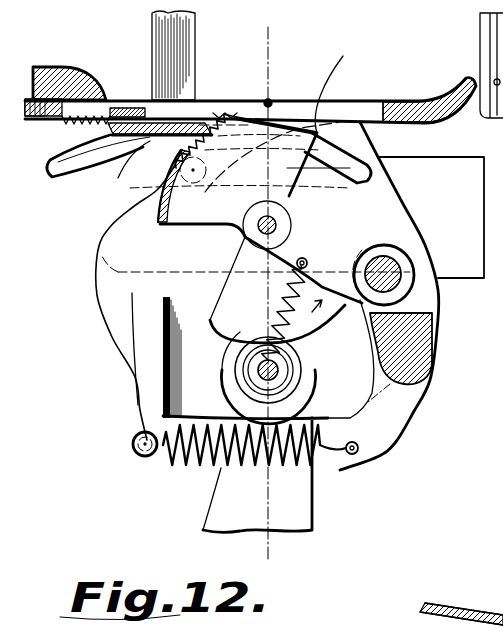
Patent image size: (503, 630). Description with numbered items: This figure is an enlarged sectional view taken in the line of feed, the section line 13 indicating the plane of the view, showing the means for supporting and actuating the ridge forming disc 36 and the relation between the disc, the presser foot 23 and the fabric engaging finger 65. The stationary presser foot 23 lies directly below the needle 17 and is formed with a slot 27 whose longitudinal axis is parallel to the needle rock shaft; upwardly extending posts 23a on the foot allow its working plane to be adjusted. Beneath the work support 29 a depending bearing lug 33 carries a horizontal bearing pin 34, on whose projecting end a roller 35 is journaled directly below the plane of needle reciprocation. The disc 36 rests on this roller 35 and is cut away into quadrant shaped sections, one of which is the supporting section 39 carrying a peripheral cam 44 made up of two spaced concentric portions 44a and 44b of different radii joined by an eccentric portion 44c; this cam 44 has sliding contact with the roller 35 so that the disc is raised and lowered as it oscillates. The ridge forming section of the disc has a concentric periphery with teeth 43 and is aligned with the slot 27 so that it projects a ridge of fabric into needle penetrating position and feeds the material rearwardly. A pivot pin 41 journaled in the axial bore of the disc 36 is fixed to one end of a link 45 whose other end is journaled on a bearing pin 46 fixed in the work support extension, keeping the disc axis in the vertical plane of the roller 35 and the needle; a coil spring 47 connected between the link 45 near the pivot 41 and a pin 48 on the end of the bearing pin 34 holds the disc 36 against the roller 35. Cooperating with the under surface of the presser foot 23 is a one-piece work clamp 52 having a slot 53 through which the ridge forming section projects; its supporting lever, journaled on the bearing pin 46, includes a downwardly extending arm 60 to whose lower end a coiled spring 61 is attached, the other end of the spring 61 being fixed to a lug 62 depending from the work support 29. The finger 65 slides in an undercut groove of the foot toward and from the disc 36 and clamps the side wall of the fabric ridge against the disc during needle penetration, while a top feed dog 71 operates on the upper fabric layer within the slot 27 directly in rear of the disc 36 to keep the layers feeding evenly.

The center line / section direction 13 is at (237, 548).
The needle 17 is at (471, 619).
The presser foot 23 is at (427, 80).
The upwardly extending post 23a is at (163, 33).
The slot 27 is at (384, 94).
The work support 29 is at (432, 176).
The bearing lug 33 is at (108, 306).
The bearing pin 34 is at (304, 389).
The roller 35 is at (307, 366).
The ridge forming disc 36 is at (349, 159).
The supporting section 39 is at (247, 256).
The pivot pin 41 is at (281, 223).
The teeth 43 is at (156, 172).
The peripheral cam 44 is at (320, 325).
The concentric portion of the cam 44a is at (430, 299).
The concentric portion of the cam 44b is at (222, 333).
The eccentric portion of the cam 44c is at (378, 328).
The link 45 is at (318, 244).
The bearing pin 46 is at (379, 263).
The coil spring 47 is at (272, 312).
The pin 48 is at (258, 373).
The work clamp 52 is at (98, 169).
The slot 53 is at (203, 128).
The downwardly extending arm 60 is at (418, 424).
The coiled spring 61 is at (190, 460).
The lug 62 is at (143, 412).
The fabric engaging finger 65 is at (334, 118).
The top feed dog 71 is at (89, 87).